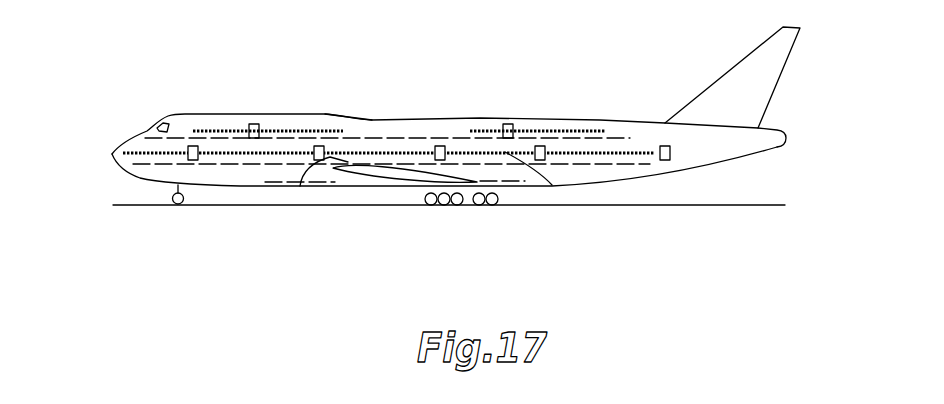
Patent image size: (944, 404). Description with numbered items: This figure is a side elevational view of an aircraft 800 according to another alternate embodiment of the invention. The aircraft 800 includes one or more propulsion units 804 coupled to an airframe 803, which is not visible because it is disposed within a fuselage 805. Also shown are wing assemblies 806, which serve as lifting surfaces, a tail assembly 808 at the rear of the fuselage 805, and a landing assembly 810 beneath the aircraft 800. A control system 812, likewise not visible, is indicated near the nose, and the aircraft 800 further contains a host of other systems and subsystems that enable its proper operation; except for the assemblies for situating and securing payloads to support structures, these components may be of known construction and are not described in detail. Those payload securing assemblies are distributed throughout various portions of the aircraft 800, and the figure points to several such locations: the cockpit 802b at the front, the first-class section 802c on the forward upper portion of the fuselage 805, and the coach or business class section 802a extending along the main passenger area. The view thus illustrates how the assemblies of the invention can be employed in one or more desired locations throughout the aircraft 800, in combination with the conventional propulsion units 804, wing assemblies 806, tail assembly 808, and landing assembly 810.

The aircraft 800 is at (188, 83).
The coach or business class section 802a is at (552, 134).
The cockpit 802b is at (108, 136).
The first-class section 802c is at (281, 127).
The airframe 803 is at (553, 185).
The propulsion unit 804 is at (309, 187).
The fuselage 805 is at (594, 117).
The wing assembly 806 is at (398, 187).
The tail assembly 808 is at (797, 78).
The landing assembly 810 is at (507, 230).
The control system 812 is at (118, 123).